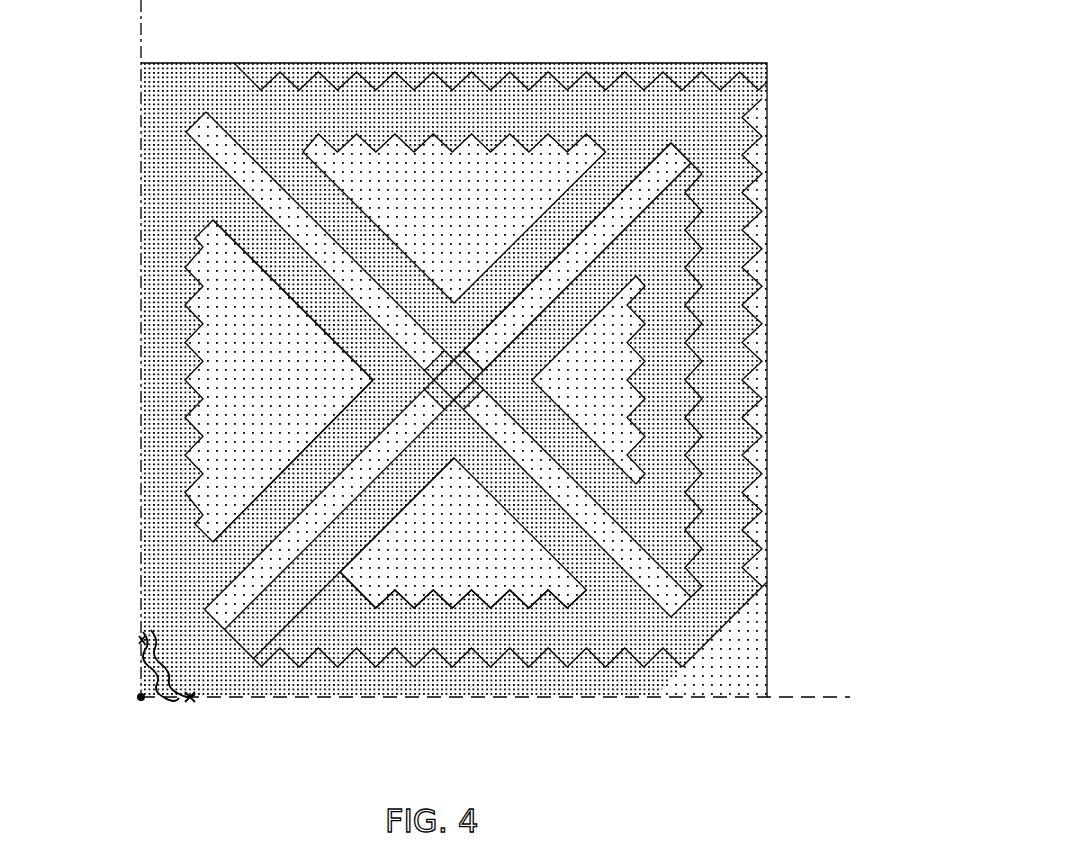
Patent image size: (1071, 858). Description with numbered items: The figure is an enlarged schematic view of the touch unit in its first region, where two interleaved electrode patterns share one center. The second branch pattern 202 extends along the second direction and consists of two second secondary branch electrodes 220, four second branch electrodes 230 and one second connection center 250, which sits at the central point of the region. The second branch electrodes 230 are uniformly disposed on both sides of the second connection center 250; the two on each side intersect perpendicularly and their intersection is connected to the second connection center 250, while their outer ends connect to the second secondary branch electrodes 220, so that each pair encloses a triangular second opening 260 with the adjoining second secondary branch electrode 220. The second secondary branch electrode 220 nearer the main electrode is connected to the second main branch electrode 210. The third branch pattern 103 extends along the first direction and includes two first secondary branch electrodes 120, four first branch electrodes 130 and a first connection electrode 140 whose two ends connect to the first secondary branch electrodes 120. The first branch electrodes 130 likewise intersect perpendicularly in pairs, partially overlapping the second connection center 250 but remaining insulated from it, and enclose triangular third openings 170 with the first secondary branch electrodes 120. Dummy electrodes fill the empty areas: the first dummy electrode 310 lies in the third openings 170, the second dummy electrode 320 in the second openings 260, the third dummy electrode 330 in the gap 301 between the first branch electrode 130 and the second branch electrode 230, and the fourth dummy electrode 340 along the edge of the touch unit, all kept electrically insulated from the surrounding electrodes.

The third branch pattern 103 is at (404, 348).
The first secondary branch electrode 120 is at (492, 385).
The first branch electrode 130 is at (454, 384).
The first connection electrode 140 is at (780, 380).
The third opening 170 is at (427, 670).
The second branch pattern 202 is at (784, 624).
The second main branch electrode 210 is at (495, 725).
The second secondary branch electrode 220 is at (459, 381).
The second branch electrode 230 is at (459, 381).
The second connection center 250 is at (438, 315).
The second opening 260 is at (207, 300).
The gap 301 is at (508, 340).
The first dummy electrode 310 is at (316, 613).
The second dummy electrode 320 is at (207, 384).
The third dummy electrode 330 is at (769, 132).
The fourth dummy electrode 340 is at (809, 342).